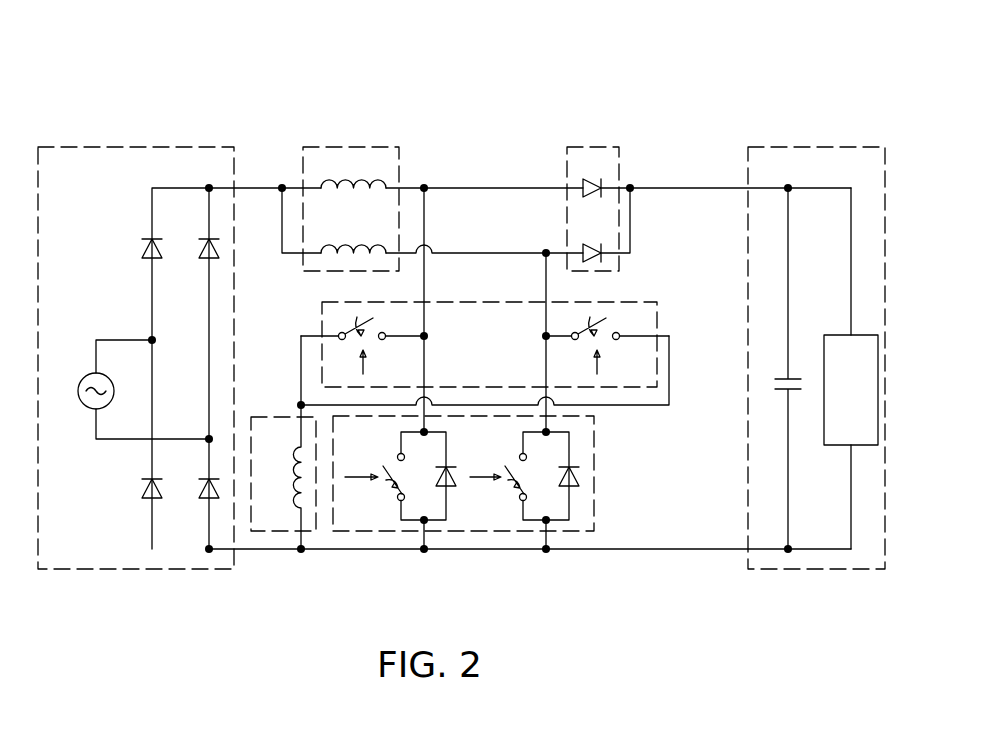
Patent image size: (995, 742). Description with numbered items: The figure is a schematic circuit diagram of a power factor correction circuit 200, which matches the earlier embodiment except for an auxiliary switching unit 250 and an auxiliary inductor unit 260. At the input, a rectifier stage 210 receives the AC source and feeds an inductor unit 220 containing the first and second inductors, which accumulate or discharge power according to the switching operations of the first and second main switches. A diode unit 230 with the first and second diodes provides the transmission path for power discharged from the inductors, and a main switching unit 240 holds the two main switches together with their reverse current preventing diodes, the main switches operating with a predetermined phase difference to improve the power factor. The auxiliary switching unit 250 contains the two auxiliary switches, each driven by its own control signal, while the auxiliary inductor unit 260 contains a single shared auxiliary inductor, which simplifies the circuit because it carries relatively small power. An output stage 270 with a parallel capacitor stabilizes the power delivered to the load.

The power factor correction circuit 200 is at (526, 83).
The rectifier 210 is at (196, 147).
The inductor unit 220 is at (362, 147).
The diode unit 230 is at (592, 147).
The switching unit 240 is at (465, 533).
The auxiliary switching unit 250 is at (658, 308).
The auxiliary inductor unit 260 is at (271, 533).
The output unit 270 is at (829, 147).